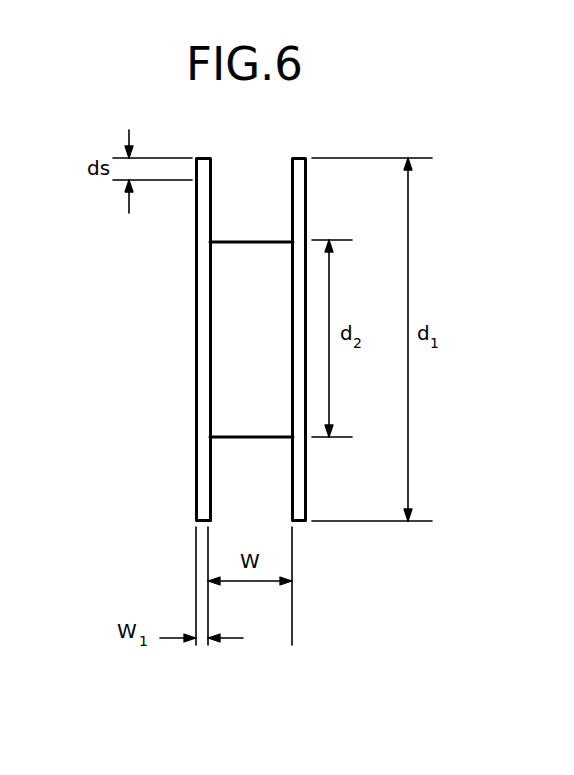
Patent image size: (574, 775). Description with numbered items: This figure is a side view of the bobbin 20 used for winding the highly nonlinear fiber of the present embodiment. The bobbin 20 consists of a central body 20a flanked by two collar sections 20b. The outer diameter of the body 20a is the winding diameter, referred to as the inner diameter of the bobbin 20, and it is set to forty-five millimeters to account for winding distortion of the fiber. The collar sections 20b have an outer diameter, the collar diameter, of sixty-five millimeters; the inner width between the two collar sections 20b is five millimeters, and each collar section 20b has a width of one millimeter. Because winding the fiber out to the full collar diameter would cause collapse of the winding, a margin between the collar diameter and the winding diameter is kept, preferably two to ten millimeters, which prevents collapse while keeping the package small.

The bobbin 20 is at (73, 313).
The body 20a is at (215, 342).
The collar sections 20b is at (196, 480).